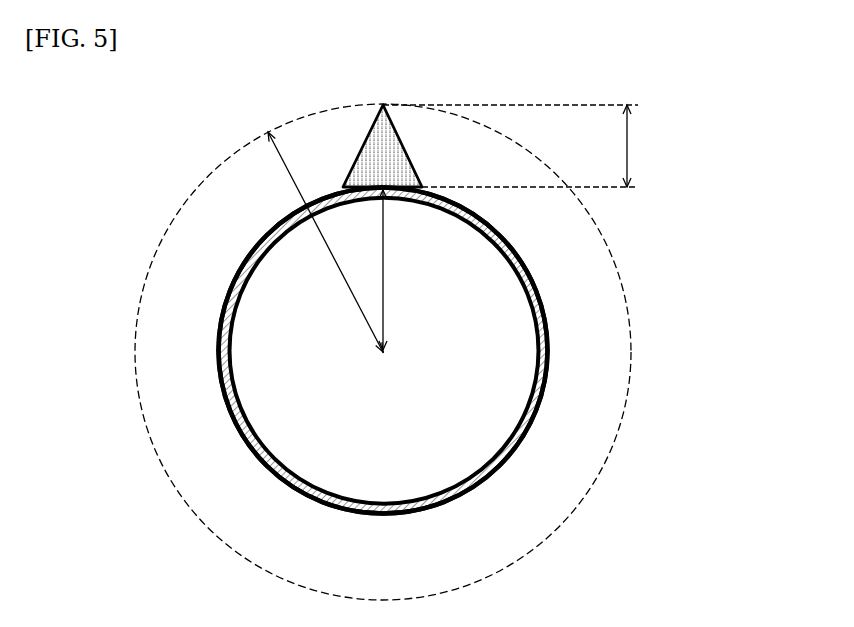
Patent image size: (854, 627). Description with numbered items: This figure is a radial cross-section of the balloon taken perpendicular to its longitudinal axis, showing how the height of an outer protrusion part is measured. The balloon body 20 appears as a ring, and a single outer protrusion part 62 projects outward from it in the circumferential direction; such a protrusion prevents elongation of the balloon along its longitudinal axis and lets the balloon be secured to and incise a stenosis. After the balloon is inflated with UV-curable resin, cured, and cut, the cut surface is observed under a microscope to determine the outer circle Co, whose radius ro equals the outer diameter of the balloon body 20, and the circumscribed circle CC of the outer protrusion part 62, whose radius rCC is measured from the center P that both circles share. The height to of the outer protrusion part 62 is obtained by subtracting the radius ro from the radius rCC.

The outer protrusion part 62 is at (364, 144).
The balloon body 20 is at (215, 360).
The circumscribed circle CC is at (192, 192).
The radius of the circumscribed circle rCC is at (328, 254).
The radius of the outer circle ro is at (387, 243).
The outer circle Co is at (548, 313).
The center P is at (383, 352).
The height of the outer protrusion part to is at (524, 146).